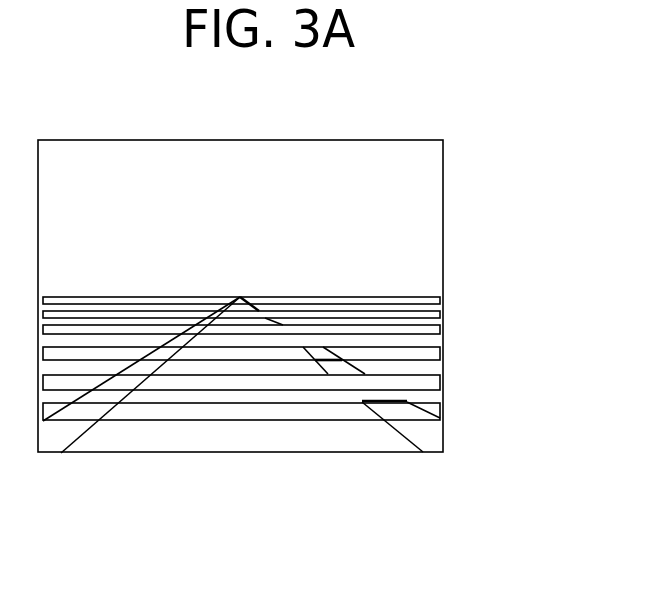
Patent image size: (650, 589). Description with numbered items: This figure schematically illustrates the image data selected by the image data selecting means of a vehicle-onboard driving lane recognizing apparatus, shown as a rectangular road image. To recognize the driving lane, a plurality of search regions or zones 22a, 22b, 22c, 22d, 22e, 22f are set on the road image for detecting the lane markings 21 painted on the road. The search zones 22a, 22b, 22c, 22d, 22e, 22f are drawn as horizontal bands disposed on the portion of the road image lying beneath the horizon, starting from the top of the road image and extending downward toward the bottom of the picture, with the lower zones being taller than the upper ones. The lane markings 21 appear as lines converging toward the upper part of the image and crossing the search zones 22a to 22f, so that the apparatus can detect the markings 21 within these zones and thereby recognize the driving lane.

The lane markings 21 is at (418, 432).
The search zone 22a is at (443, 299).
The search zone 22b is at (443, 314).
The search zone 22c is at (443, 329).
The search zone 22d is at (443, 353).
The search zone 22e is at (443, 382).
The search zone 22f is at (443, 412).